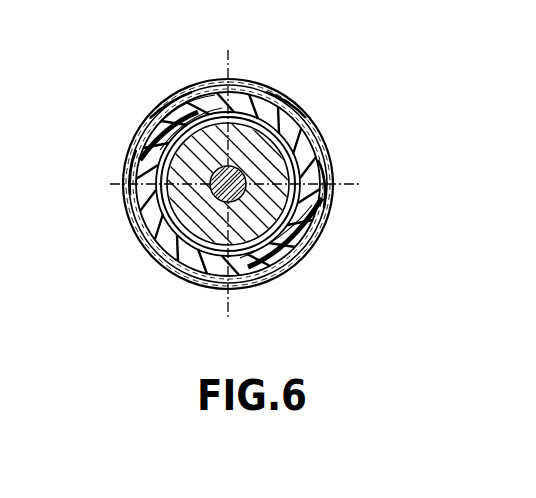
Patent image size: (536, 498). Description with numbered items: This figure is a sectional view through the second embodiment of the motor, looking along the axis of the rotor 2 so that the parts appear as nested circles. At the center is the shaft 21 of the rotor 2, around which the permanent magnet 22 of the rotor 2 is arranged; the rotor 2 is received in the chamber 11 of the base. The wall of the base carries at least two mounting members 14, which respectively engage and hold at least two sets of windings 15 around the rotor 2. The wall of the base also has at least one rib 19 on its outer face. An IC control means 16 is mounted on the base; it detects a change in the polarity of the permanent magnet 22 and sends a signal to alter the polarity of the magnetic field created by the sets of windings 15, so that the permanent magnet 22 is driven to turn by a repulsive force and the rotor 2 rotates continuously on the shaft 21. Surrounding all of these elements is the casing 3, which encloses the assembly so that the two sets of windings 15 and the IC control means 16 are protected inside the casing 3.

The rotor 2 is at (177, 97).
The casing 3 is at (262, 92).
The chamber 11 is at (318, 133).
The mounting member 14 is at (128, 158).
The set of windings 15 is at (162, 100).
The IC control means 16 is at (262, 280).
The rib 19 is at (225, 85).
The shaft 21 is at (305, 247).
The permanent magnet 22 is at (183, 276).